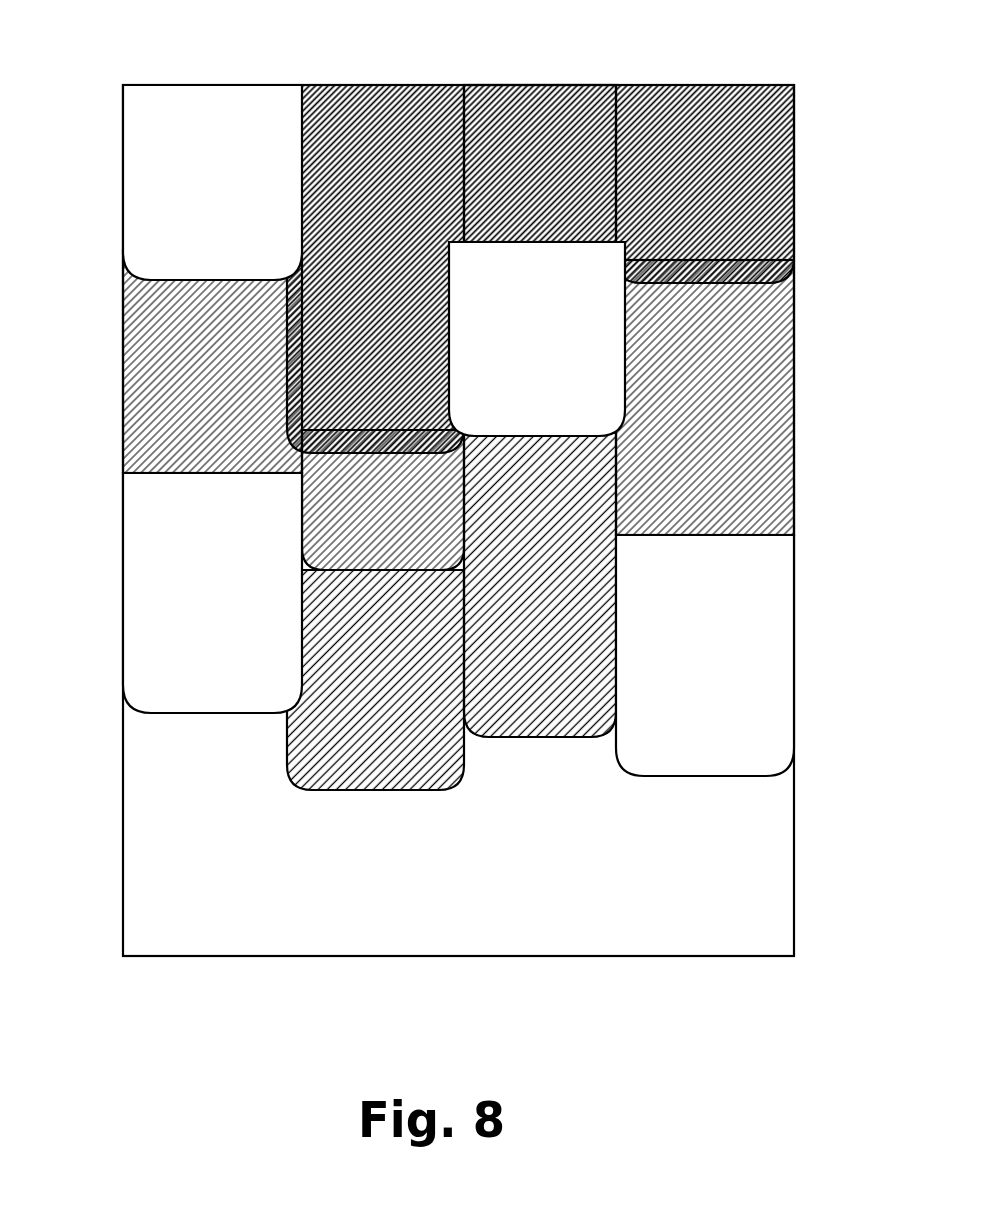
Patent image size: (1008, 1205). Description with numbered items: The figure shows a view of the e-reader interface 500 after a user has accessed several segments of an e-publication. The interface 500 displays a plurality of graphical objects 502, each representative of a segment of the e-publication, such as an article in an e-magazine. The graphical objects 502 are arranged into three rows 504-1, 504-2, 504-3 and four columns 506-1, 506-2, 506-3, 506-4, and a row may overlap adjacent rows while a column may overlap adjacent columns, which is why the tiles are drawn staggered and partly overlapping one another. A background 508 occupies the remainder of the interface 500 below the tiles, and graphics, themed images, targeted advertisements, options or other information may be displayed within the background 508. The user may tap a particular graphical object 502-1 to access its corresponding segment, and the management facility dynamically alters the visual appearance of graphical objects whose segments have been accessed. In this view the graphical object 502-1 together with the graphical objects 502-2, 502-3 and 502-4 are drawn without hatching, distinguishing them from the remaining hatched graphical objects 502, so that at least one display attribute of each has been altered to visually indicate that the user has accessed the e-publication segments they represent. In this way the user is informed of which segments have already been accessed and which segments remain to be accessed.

The e-reader interface 500 is at (333, 956).
The graphical objects 502 is at (113, 85).
The graphical object 502-1 is at (537, 339).
The graphical object 502-2 is at (212, 182).
The graphical object 502-3 is at (212, 593).
The graphical object 502-4 is at (705, 655).
The row 504-1 is at (797, 85).
The row 504-2 is at (797, 278).
The row 504-3 is at (797, 485).
The column 506-1 is at (296, 78).
The column 506-2 is at (466, 78).
The column 506-3 is at (616, 78).
The column 506-4 is at (794, 78).
The background 508 is at (183, 907).